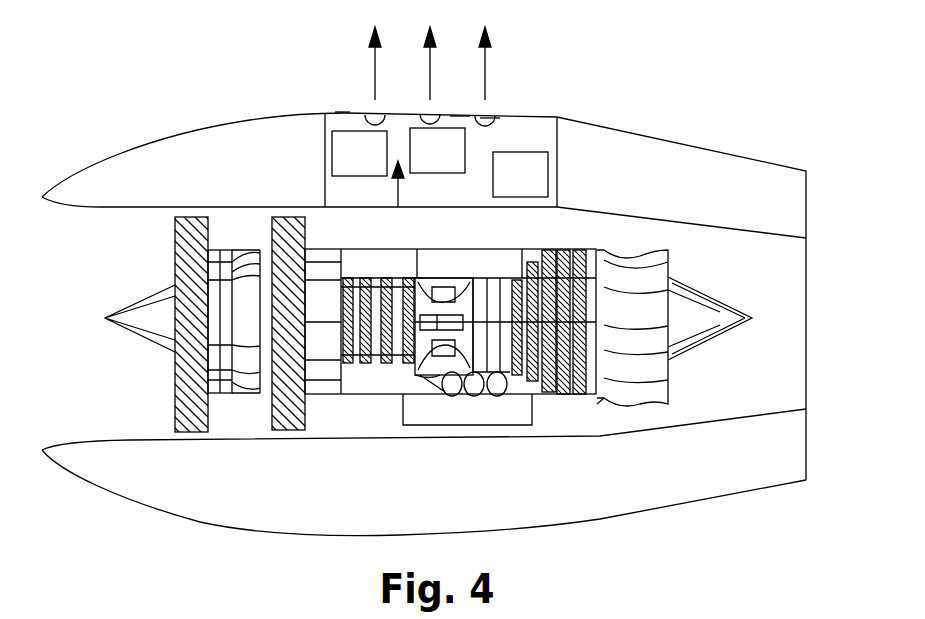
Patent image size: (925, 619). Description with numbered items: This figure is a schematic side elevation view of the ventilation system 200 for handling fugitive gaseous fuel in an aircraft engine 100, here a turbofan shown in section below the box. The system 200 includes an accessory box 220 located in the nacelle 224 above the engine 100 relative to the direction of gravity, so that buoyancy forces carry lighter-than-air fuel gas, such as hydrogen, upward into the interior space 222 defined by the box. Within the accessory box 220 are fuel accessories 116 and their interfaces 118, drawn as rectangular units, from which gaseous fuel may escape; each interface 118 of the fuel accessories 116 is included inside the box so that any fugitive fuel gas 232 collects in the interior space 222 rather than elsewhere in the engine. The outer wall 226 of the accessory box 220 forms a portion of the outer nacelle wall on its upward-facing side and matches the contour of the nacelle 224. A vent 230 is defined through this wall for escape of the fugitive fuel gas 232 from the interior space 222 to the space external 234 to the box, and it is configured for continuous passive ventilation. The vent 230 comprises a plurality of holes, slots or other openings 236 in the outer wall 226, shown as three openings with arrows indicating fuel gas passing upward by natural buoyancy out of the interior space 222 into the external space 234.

The engine 100 is at (104, 302).
The fuel accessory 116 is at (340, 146).
The interface 118 is at (532, 180).
The system 200 is at (348, 68).
The accessory box 220 is at (316, 143).
The interior space 222 is at (459, 118).
The nacelle 224 is at (150, 150).
The outer wall 226 is at (343, 112).
The vent 230 is at (510, 103).
The fugitive fuel gas 232 is at (394, 198).
The space external 234 is at (506, 33).
The openings 236 is at (376, 112).